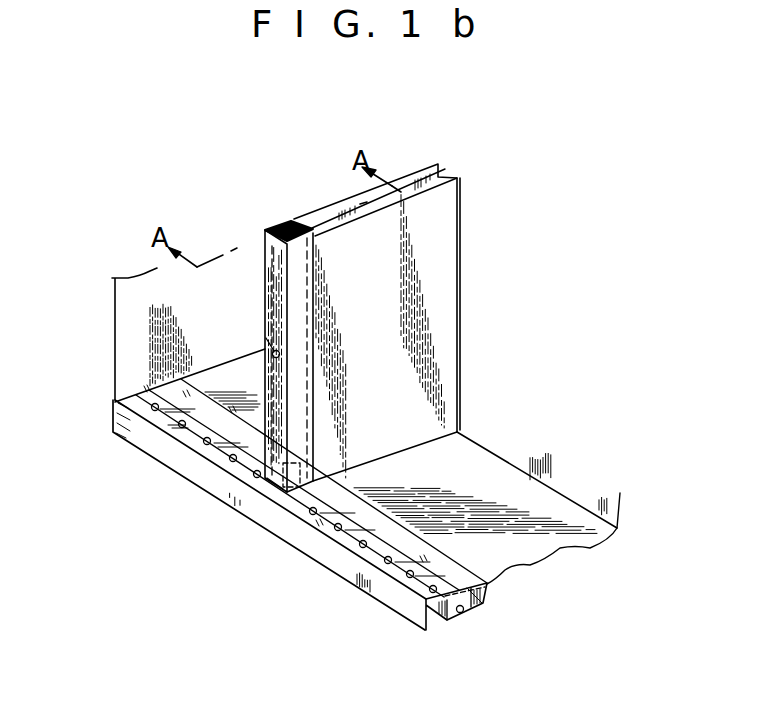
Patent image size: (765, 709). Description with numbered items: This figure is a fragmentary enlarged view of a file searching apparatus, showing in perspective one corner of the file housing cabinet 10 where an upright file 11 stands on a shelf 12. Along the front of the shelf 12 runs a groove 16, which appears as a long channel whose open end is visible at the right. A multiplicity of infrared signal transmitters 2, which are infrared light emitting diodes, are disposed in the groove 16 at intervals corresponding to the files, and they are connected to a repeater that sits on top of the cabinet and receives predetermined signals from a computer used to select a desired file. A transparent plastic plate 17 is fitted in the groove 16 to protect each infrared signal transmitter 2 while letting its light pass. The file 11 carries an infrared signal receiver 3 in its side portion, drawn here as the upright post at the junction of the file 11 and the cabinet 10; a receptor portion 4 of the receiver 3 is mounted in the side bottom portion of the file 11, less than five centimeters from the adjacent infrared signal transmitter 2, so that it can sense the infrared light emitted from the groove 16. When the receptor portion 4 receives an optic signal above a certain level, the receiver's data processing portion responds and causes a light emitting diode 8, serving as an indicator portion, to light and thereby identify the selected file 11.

The infrared signal transmitter 2 is at (468, 616).
The infrared signal receiver 3 is at (287, 231).
The receptor portion 4 is at (290, 493).
The light emitting diode 8 is at (266, 338).
The file housing cabinet 10 is at (125, 304).
The file 11 is at (438, 318).
The shelf 12 is at (493, 468).
The groove 16 is at (487, 605).
The transparent plastic plate 17 is at (469, 586).